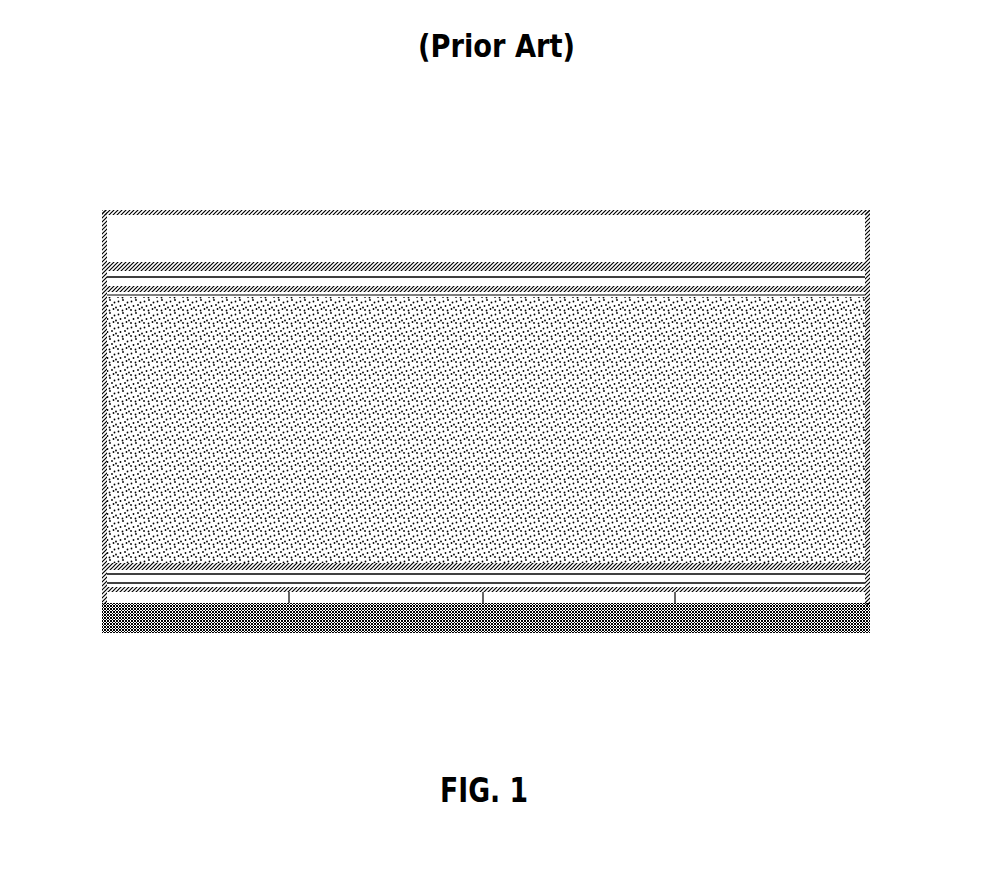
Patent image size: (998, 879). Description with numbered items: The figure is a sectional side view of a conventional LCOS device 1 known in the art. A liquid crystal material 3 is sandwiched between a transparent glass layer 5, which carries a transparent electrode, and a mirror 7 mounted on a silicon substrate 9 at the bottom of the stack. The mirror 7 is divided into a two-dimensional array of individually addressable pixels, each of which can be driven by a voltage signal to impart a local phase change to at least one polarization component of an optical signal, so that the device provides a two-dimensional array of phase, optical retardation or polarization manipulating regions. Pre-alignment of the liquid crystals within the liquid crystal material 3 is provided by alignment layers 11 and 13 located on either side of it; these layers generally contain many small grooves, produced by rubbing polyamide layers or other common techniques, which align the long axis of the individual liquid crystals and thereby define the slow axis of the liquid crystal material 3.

The LCOS device 1 is at (491, 375).
The transparent glass layer 5 is at (122, 233).
The alignment layer 11 is at (870, 272).
The liquid crystal material 3 is at (118, 428).
The alignment layer 13 is at (103, 565).
The mirror 7 is at (870, 598).
The silicon substrate 9 is at (105, 612).